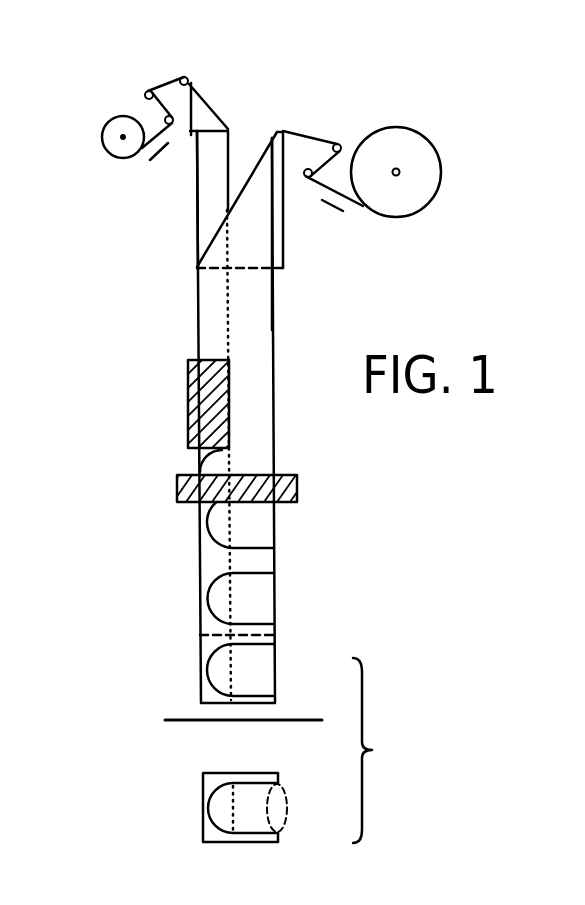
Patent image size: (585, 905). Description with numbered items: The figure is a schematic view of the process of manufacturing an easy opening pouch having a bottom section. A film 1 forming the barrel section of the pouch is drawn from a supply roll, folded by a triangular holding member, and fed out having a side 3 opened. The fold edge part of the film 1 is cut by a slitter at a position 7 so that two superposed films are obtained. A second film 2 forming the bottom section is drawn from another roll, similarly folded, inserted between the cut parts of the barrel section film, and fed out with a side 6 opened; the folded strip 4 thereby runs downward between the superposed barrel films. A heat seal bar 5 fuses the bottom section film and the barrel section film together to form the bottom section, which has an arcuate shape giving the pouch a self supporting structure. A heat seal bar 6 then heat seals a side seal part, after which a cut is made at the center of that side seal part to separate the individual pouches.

The film 1 is at (440, 152).
The film 2 is at (102, 132).
The side 3 is at (272, 308).
The second web strip 4 is at (195, 165).
The heat seal bar 5 is at (188, 362).
The heat seal bar 6 is at (298, 484).
The position 7 is at (198, 247).